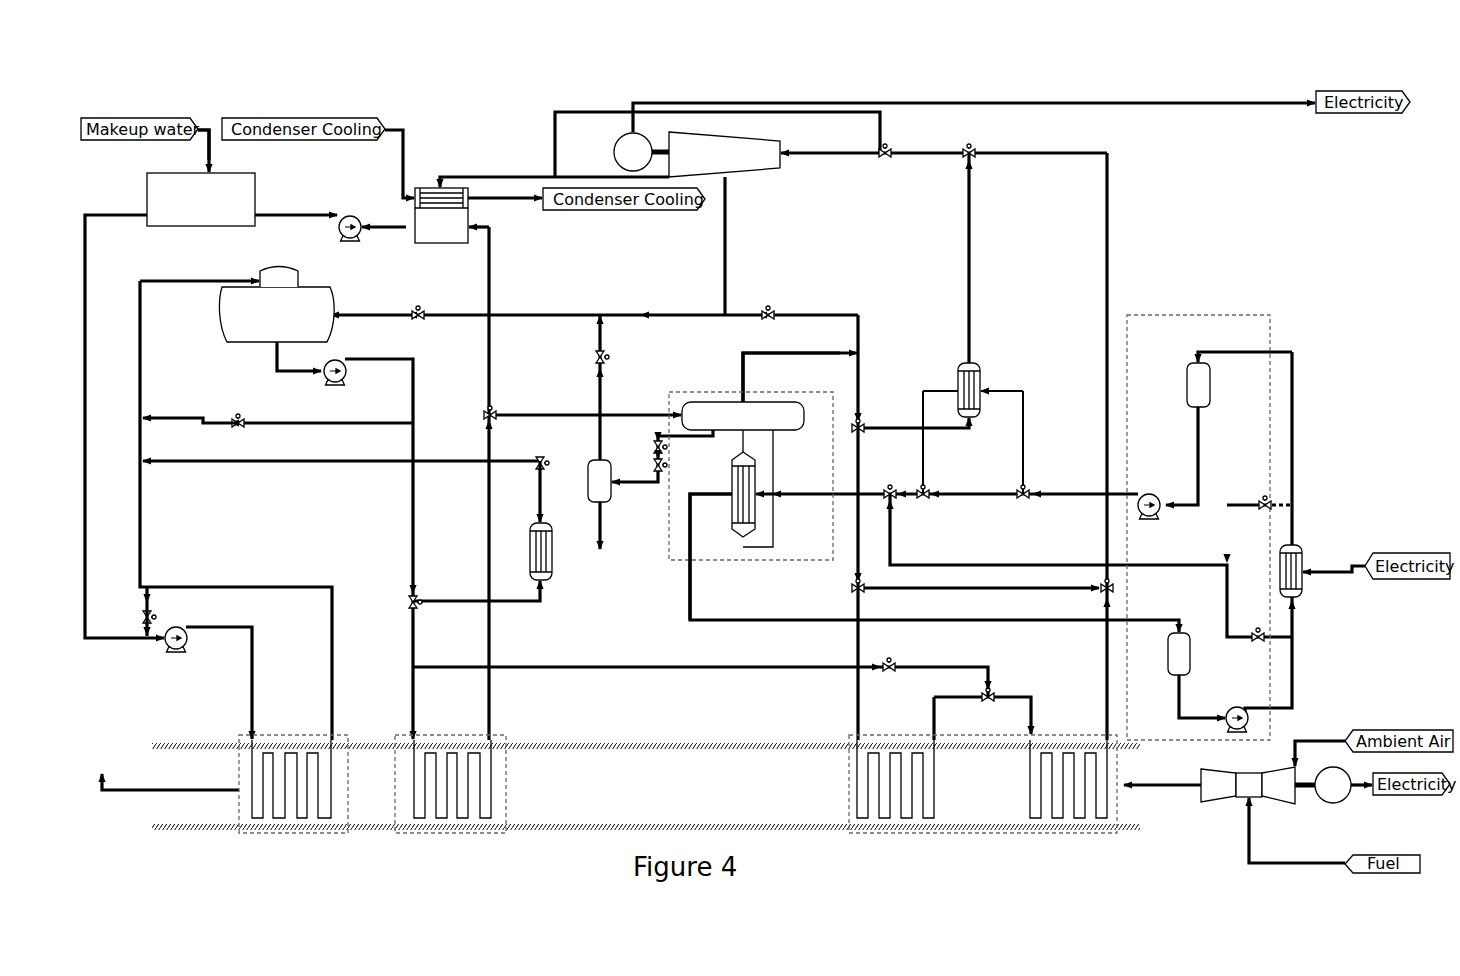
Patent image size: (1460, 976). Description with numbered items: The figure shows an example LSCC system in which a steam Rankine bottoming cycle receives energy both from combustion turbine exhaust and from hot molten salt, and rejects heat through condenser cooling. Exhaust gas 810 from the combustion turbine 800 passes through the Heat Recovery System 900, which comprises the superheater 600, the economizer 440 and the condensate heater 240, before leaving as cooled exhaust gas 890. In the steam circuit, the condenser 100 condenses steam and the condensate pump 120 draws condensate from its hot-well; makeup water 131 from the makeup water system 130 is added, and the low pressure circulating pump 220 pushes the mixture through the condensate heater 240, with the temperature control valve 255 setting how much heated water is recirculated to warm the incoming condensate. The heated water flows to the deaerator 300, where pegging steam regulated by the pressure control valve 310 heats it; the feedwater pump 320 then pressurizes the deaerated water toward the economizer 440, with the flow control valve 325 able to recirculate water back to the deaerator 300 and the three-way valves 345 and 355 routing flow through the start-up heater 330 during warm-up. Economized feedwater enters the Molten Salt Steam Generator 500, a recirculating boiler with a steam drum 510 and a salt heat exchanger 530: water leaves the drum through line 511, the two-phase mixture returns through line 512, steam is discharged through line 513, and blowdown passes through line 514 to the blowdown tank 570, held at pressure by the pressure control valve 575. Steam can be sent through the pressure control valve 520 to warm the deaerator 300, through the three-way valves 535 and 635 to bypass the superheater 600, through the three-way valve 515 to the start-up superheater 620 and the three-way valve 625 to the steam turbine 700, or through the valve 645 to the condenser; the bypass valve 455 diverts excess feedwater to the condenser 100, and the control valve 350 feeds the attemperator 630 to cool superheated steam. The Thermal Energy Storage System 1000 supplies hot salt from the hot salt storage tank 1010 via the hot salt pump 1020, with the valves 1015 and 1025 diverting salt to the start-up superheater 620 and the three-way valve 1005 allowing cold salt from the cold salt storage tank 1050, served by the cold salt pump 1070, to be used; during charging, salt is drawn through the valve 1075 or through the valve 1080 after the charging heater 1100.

The condenser 100 is at (418, 243).
The condensate pump 120 is at (348, 239).
The makeup water system 130 is at (207, 226).
The makeup water 131 is at (222, 148).
The low pressure circulating pump 220 is at (178, 650).
The condensate heater 240 is at (280, 833).
The temperature control valve 255 is at (150, 612).
The deaerator 300 is at (227, 342).
The pressure control valve 310 is at (421, 318).
The feedwater pump 320 is at (340, 383).
The flow control valve 325 is at (241, 426).
The start-up heater 330 is at (552, 578).
The three-way valve 345 is at (416, 605).
The control valve 350 is at (895, 662).
The three-way valve 355 is at (543, 466).
The economizer 440 is at (440, 833).
The bypass valve 455 is at (493, 418).
The molten salt steam generator 500 is at (718, 560).
The steam drum 510 is at (784, 430).
The line 511 is at (773, 510).
The line 512 is at (742, 436).
The line 513 is at (757, 353).
The line 514 is at (656, 446).
The three-way valve 515 is at (862, 431).
The pressure control valve 520 is at (771, 318).
The salt heat exchanger 530 is at (728, 522).
The three-way valve 535 is at (862, 591).
The blowdown tank 570 is at (611, 500).
The pressure control valve 575 is at (604, 355).
The superheater 600 is at (980, 833).
The start-up superheater 620 is at (980, 380).
The three-way valve 625 is at (972, 156).
The attemperator 630 is at (993, 692).
The three-way valve 635 is at (1104, 591).
The valve 645 is at (888, 156).
The steam turbine 700 is at (762, 168).
The combustion turbine 800 is at (1262, 797).
The exhaust gas 810 is at (1147, 788).
The cooled exhaust gas 890 is at (105, 790).
The heat recovery system 900 is at (772, 833).
The thermal energy storage system 1000 is at (1272, 332).
The three-way valve 1005 is at (893, 497).
The hot salt storage tank 1010 is at (1210, 403).
The valve 1015 is at (1026, 497).
The hot salt pump 1020 is at (1152, 517).
The valve 1025 is at (926, 497).
The cold salt storage tank 1050 is at (1190, 660).
The cold salt pump 1070 is at (1237, 731).
The valve 1075 is at (1258, 640).
The valve 1080 is at (1262, 508).
The charging heater 1100 is at (1302, 585).